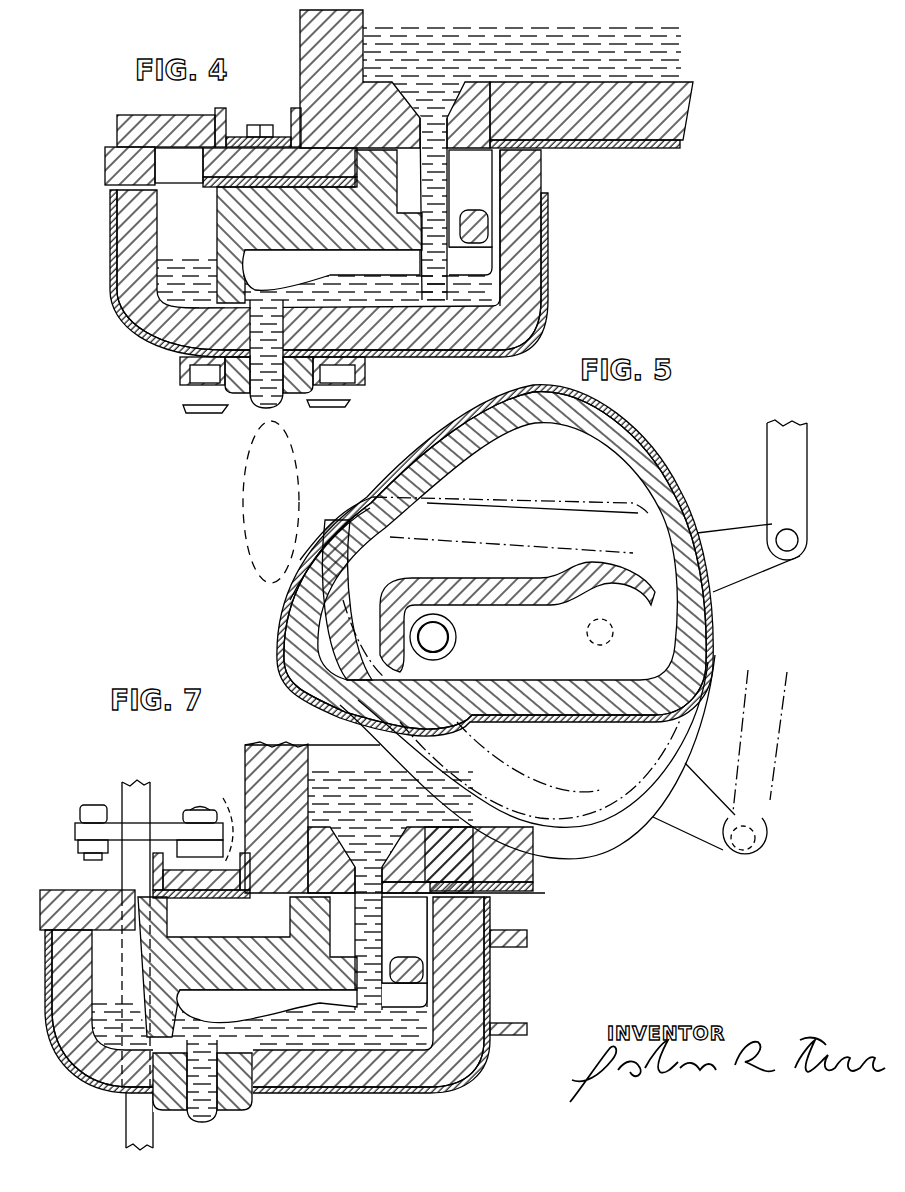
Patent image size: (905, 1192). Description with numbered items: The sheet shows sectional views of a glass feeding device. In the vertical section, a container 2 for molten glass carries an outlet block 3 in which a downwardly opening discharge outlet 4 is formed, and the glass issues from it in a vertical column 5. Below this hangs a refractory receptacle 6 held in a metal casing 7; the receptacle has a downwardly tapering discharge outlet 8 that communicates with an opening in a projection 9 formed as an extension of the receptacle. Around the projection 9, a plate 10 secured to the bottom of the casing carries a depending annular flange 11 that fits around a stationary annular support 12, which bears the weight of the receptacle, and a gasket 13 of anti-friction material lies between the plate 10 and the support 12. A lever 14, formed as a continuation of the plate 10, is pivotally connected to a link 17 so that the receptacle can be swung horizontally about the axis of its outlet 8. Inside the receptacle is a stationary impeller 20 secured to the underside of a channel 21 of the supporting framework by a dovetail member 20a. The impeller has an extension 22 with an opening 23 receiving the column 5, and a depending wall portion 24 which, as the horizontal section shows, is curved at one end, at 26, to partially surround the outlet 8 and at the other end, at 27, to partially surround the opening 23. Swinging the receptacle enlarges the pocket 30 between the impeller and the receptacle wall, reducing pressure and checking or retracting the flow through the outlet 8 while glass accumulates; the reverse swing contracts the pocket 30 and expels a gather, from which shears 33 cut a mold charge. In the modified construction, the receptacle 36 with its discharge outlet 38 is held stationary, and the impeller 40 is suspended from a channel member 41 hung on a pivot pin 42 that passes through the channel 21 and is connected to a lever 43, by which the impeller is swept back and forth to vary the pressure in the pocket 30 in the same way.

In FIG. 4, the container 2 is at (660, 112).
In FIG. 7, the container 2 is at (285, 760).
In FIG. 4, the outlet block 3 is at (375, 96).
In FIG. 4, the discharge outlet 4 is at (415, 121).
In FIG. 4, the vertical column of glass 5 is at (447, 176).
In FIG. 5, the vertical column of glass 5 is at (597, 620).
In FIG. 7, the vertical column of glass 5 is at (360, 929).
In FIG. 4, the receptacle 6 is at (528, 259).
In FIG. 5, the receptacle 6 is at (620, 460).
In FIG. 4, the metal casing 7 is at (546, 284).
In FIG. 5, the metal casing 7 is at (655, 473).
In FIG. 4, the discharge outlet 8 is at (165, 343).
In FIG. 5, the discharge outlet 8 is at (448, 637).
In FIG. 4, the projection 9 is at (243, 385).
In FIG. 4, the plate 10 is at (360, 362).
In FIG. 4, the depending annular flange 11 is at (182, 372).
In FIG. 4, the stationary annular support 12 is at (215, 392).
In FIG. 4, the gasket 13 is at (338, 390).
In FIG. 5, the lever 14 is at (725, 540).
In FIG. 5, the link 17 is at (777, 465).
In FIG. 4, the impeller 20 is at (240, 222).
In FIG. 5, the impeller 20 is at (458, 582).
In FIG. 4, the dovetail member 20a is at (192, 170).
In FIG. 4, the channel 21 is at (233, 128).
In FIG. 4, the extension 22 is at (482, 225).
In FIG. 7, the extension 22 is at (410, 968).
In FIG. 4, the opening 23 is at (458, 213).
In FIG. 7, the opening 23 is at (388, 958).
In FIG. 4, the depending wall portion 24 is at (400, 303).
In FIG. 5, the depending wall portion 24 is at (503, 583).
In FIG. 7, the depending wall portion 24 is at (266, 1090).
In FIG. 4, the curved end of wall portion 26 is at (163, 284).
In FIG. 5, the curved end of wall portion 26 is at (390, 646).
In FIG. 7, the curved end of wall portion 26 is at (90, 1062).
In FIG. 5, the curved end of wall portion 27 is at (652, 598).
In FIG. 4, the pocket 30 is at (367, 266).
In FIG. 5, the pocket 30 is at (537, 656).
In FIG. 7, the pocket 30 is at (302, 1003).
In FIG. 4, the shears 33 is at (197, 413).
In FIG. 7, the receptacle 36 is at (462, 991).
In FIG. 7, the discharge outlet 38 is at (208, 1118).
In FIG. 7, the impeller 40 is at (207, 953).
In FIG. 7, the channel member 41 is at (153, 877).
In FIG. 7, the pivot pin 42 is at (232, 822).
In FIG. 7, the lever 43 is at (90, 832).